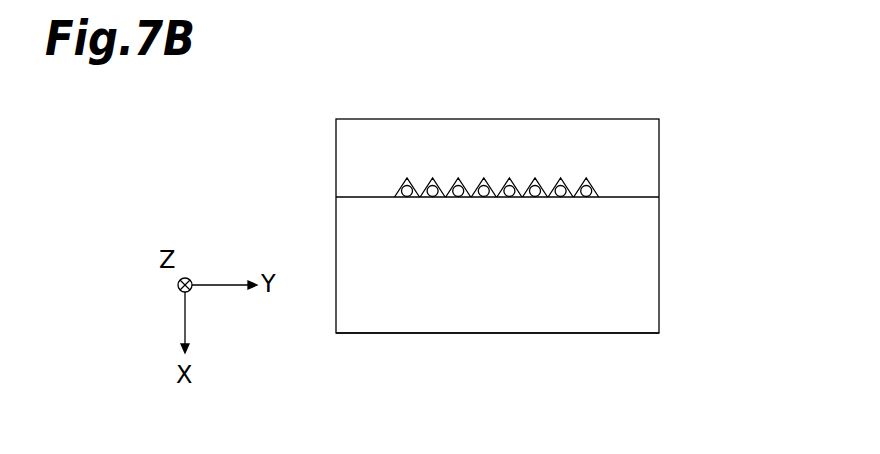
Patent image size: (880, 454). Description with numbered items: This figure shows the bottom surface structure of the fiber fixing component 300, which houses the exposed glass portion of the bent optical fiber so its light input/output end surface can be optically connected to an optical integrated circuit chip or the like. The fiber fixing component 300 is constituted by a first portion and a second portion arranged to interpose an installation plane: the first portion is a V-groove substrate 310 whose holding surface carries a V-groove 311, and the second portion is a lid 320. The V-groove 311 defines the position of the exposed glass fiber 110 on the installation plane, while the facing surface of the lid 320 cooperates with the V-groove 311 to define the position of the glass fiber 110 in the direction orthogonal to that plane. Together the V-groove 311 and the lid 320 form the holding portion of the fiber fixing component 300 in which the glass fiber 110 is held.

The fiber fixing component 300 is at (727, 135).
The V-groove substrate 310 is at (638, 151).
The lid 320 is at (638, 248).
The V-groove 311 is at (406, 185).
The glass fiber 110 is at (408, 194).